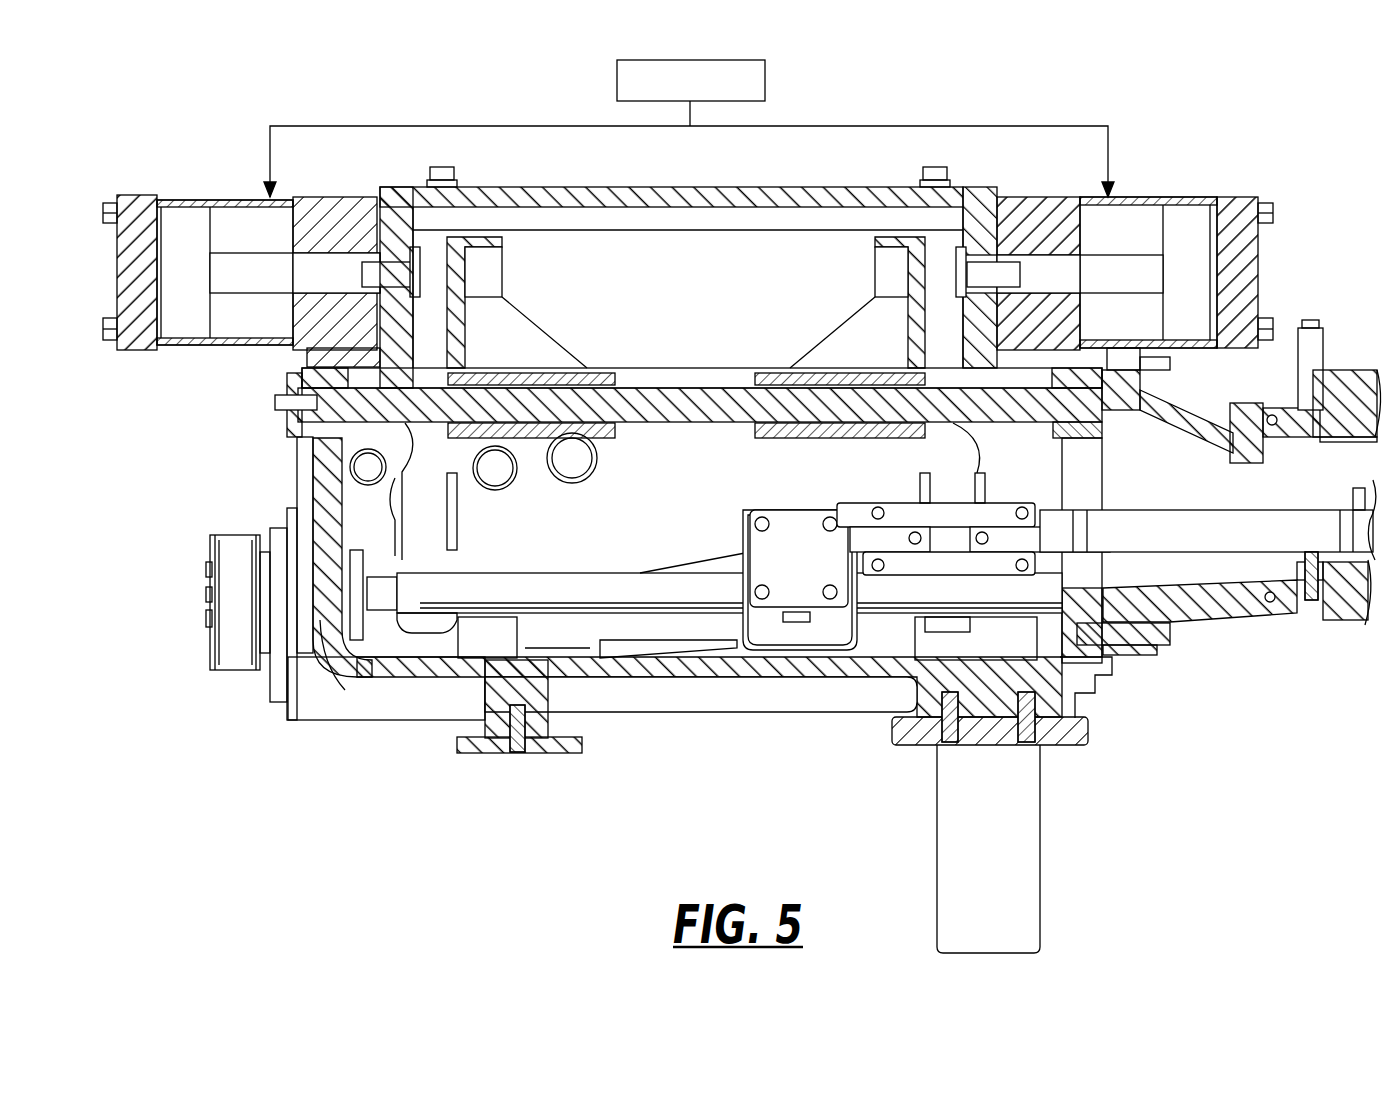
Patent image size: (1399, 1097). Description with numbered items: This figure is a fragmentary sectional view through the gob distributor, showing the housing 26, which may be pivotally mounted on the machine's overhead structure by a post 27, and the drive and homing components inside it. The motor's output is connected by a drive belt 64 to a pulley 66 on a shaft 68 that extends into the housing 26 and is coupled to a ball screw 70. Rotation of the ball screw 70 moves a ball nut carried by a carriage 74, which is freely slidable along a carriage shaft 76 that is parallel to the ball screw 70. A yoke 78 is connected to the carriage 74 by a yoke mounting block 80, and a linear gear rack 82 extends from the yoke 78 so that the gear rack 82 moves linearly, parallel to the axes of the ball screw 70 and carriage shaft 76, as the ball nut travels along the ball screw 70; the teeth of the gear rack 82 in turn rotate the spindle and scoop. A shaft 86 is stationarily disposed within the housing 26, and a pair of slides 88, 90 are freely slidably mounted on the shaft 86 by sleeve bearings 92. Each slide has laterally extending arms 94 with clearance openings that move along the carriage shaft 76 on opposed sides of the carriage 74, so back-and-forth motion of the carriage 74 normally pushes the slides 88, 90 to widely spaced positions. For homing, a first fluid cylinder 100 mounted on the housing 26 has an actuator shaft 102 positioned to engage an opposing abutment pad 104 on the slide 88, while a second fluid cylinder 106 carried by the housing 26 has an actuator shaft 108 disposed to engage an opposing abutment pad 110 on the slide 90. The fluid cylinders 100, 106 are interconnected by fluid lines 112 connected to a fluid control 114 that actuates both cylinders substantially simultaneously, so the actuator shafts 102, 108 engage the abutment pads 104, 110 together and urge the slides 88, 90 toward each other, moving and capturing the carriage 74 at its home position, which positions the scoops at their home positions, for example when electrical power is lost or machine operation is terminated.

The fluid control 114 is at (767, 63).
The fluid lines 112 is at (877, 126).
The second fluid cylinder 106 is at (245, 195).
The actuator shaft 108 is at (328, 268).
The abutment pad 110 is at (442, 262).
The abutment pad 104 is at (928, 262).
The housing 26 is at (746, 185).
The first fluid cylinder 100 is at (1127, 197).
The actuator shaft 102 is at (1042, 268).
The slide 90 is at (537, 312).
The slide 88 is at (833, 320).
The sleeve bearings 92 is at (585, 368).
The shaft 86 is at (685, 395).
The arms 94 is at (427, 555).
The ball screw 70 is at (530, 580).
The yoke mounting block 80 is at (765, 510).
The linear gear rack 82 is at (1188, 518).
The drive belt 64 is at (233, 540).
The pulley 66 is at (213, 640).
The shaft 68 is at (375, 598).
The carriage shaft 76 is at (420, 672).
The carriage 74 is at (560, 640).
The yoke 78 is at (945, 552).
The post 27 is at (1020, 845).